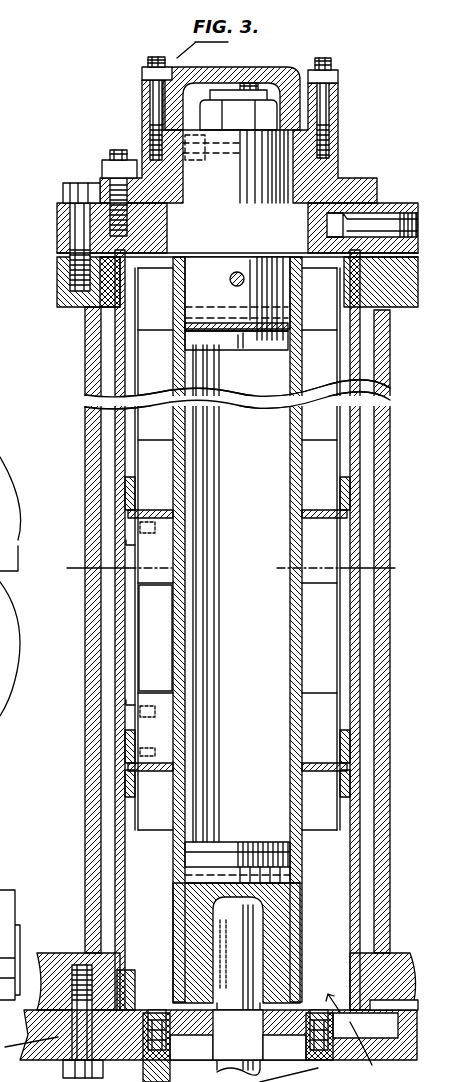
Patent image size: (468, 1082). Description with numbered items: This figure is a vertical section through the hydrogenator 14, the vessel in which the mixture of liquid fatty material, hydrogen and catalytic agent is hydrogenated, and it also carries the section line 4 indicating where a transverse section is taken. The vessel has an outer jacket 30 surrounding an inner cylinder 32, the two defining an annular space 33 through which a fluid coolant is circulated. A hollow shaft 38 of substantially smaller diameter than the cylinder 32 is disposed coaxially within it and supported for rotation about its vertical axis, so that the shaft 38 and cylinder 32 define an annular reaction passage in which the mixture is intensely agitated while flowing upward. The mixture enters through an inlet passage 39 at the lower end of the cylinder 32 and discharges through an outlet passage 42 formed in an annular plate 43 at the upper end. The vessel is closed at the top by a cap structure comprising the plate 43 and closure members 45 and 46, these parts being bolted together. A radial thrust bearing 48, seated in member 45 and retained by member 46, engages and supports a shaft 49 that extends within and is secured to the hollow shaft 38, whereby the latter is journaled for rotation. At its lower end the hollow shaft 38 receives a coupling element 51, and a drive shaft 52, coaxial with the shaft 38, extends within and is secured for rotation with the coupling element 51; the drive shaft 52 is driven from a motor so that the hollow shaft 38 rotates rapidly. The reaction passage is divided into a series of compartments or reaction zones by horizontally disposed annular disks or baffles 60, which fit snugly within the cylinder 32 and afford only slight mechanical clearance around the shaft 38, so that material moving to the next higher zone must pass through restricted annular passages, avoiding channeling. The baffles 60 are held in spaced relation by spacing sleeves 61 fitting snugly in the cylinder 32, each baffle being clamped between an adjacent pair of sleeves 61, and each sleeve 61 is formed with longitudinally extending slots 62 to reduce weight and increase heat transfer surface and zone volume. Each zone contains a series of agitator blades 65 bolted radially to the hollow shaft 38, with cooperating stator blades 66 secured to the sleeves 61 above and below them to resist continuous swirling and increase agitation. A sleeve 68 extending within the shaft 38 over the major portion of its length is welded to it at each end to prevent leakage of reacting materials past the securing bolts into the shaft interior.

The section line 4- 4 is at (232, 563).
The hydrogenator 14 is at (76, 803).
The outer jacket 30 is at (91, 687).
The inner cylinder 32 is at (120, 450).
The annular space 33 is at (108, 707).
The hollow shaft 38 is at (183, 645).
The inlet passage 39 is at (382, 1033).
The outlet passage 42 is at (390, 203).
The annular plate 43 is at (60, 218).
The closure member 45 is at (141, 155).
The closure member 46 is at (141, 97).
The radial thrust bearing 48 is at (313, 157).
The shaft 49 is at (202, 267).
The coupling element 51 is at (189, 896).
The drive shaft 52 is at (223, 1047).
The annular disk or baffle 60 is at (125, 512).
The spacing sleeve 61 is at (127, 282).
The longitudinally extending slot 62 is at (128, 418).
The agitator blade 65 is at (163, 620).
The stator blade 66 is at (142, 550).
The sleeve 68 is at (190, 766).